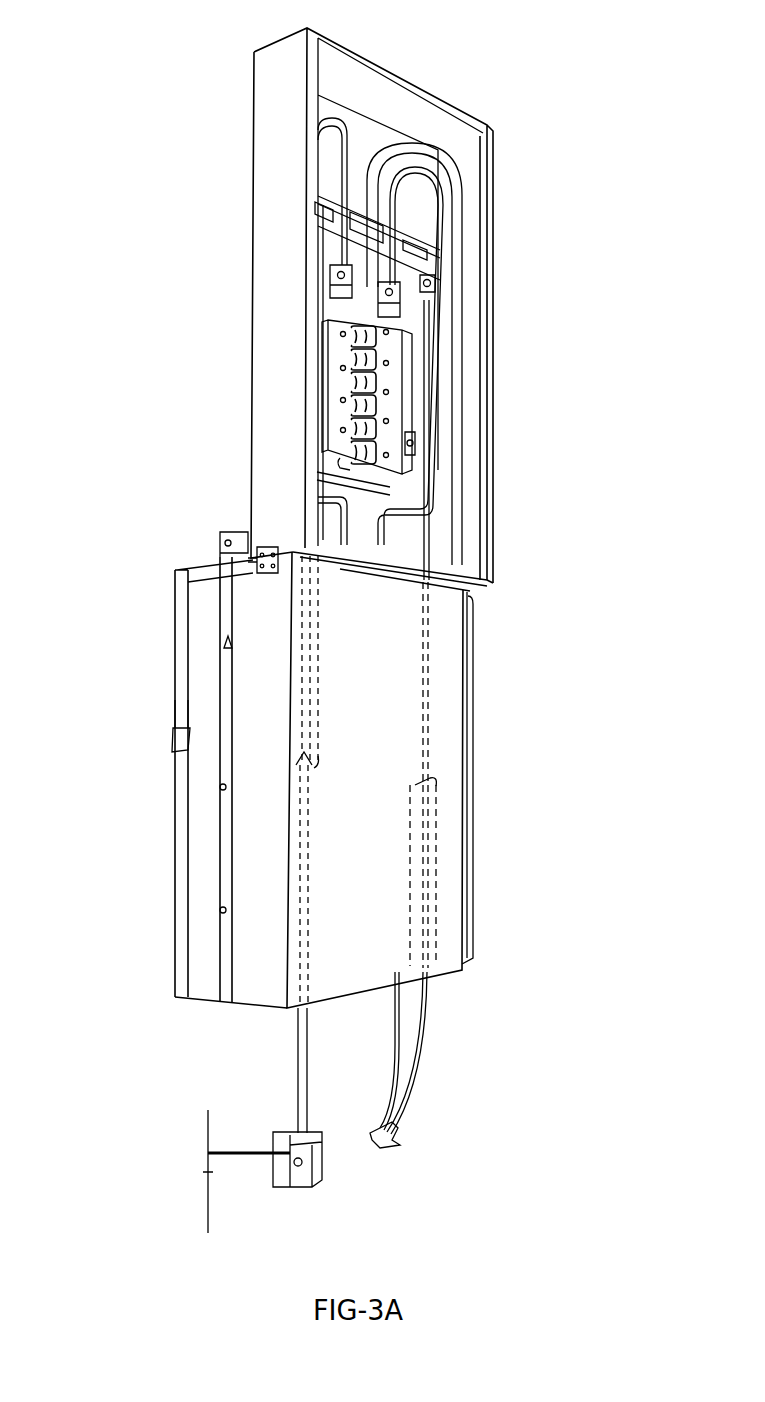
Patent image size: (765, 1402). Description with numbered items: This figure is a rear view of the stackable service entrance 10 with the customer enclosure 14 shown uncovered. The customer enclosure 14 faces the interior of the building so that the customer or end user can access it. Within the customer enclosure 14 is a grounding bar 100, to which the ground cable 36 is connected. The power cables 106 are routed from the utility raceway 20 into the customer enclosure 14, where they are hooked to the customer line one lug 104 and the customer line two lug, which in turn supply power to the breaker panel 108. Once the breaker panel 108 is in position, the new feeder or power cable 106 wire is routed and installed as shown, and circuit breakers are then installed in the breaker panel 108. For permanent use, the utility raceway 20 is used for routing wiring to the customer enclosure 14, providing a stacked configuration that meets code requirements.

The electrical distribution system 10 is at (203, 138).
The customer enclosure 14 is at (488, 268).
The utility raceway 20 is at (293, 588).
The ground cable 36 is at (425, 465).
The grounding bar 100 is at (423, 378).
The customer line 1 lug 104 is at (322, 296).
The power cables 106 is at (415, 272).
The breaker panel 108 is at (393, 402).